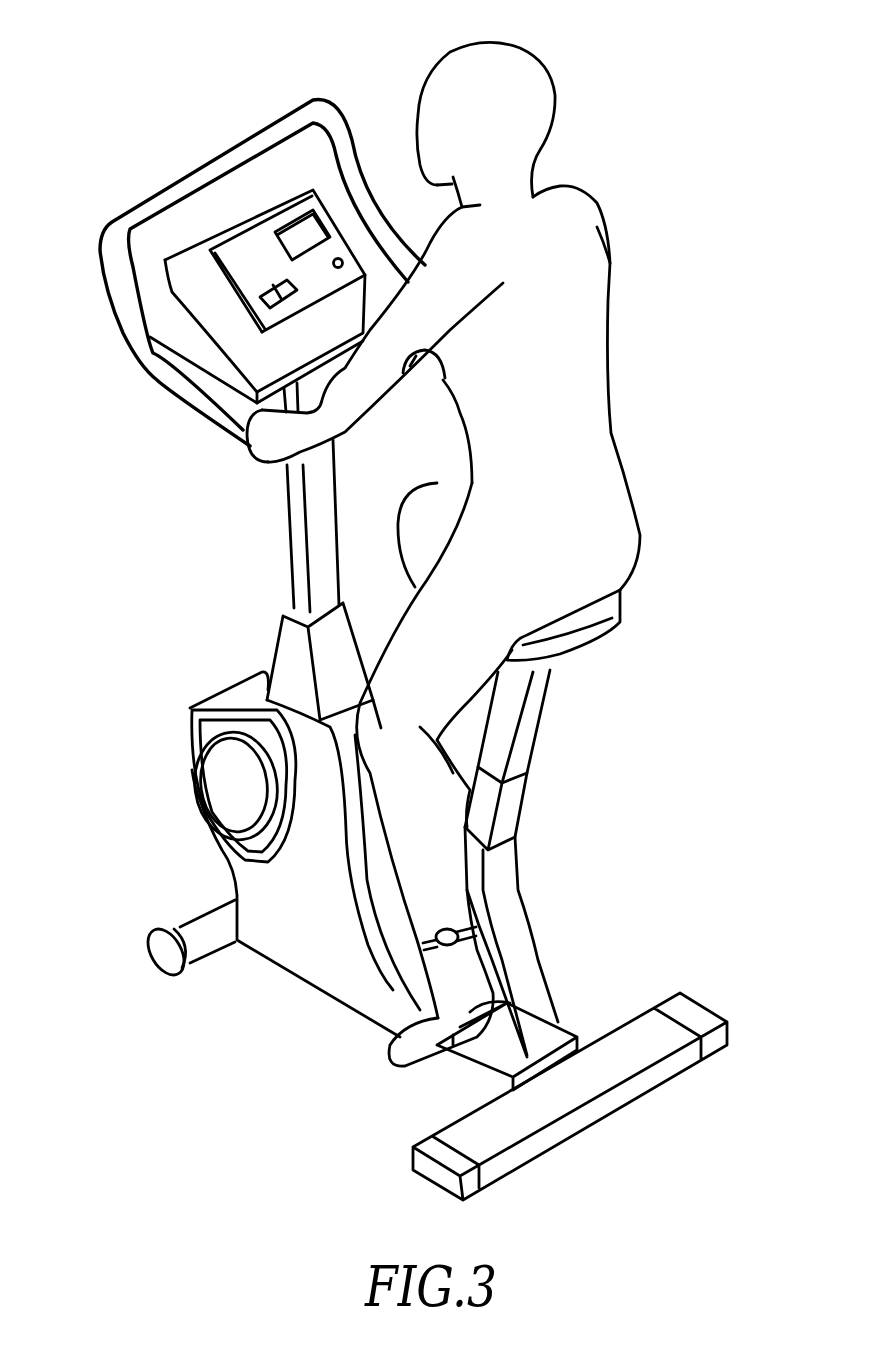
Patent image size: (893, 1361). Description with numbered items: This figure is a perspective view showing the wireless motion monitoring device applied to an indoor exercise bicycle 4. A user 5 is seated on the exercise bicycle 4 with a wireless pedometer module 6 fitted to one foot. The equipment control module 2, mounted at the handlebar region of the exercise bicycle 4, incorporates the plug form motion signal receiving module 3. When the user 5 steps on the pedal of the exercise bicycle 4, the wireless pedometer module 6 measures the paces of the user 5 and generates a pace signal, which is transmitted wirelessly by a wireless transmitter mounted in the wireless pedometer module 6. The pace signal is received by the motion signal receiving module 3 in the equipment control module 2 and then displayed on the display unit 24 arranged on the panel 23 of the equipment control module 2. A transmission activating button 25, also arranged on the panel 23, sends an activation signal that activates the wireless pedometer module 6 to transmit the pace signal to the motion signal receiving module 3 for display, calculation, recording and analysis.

The equipment control module 2 is at (190, 305).
The plug form motion signal receiving module 3 is at (256, 204).
The exercise bicycle 4 is at (222, 652).
The user 5 is at (590, 377).
The wireless pedometer module 6 is at (448, 929).
The panel 23 is at (274, 297).
The display unit 24 is at (298, 237).
The transmission activating button 25 is at (343, 260).